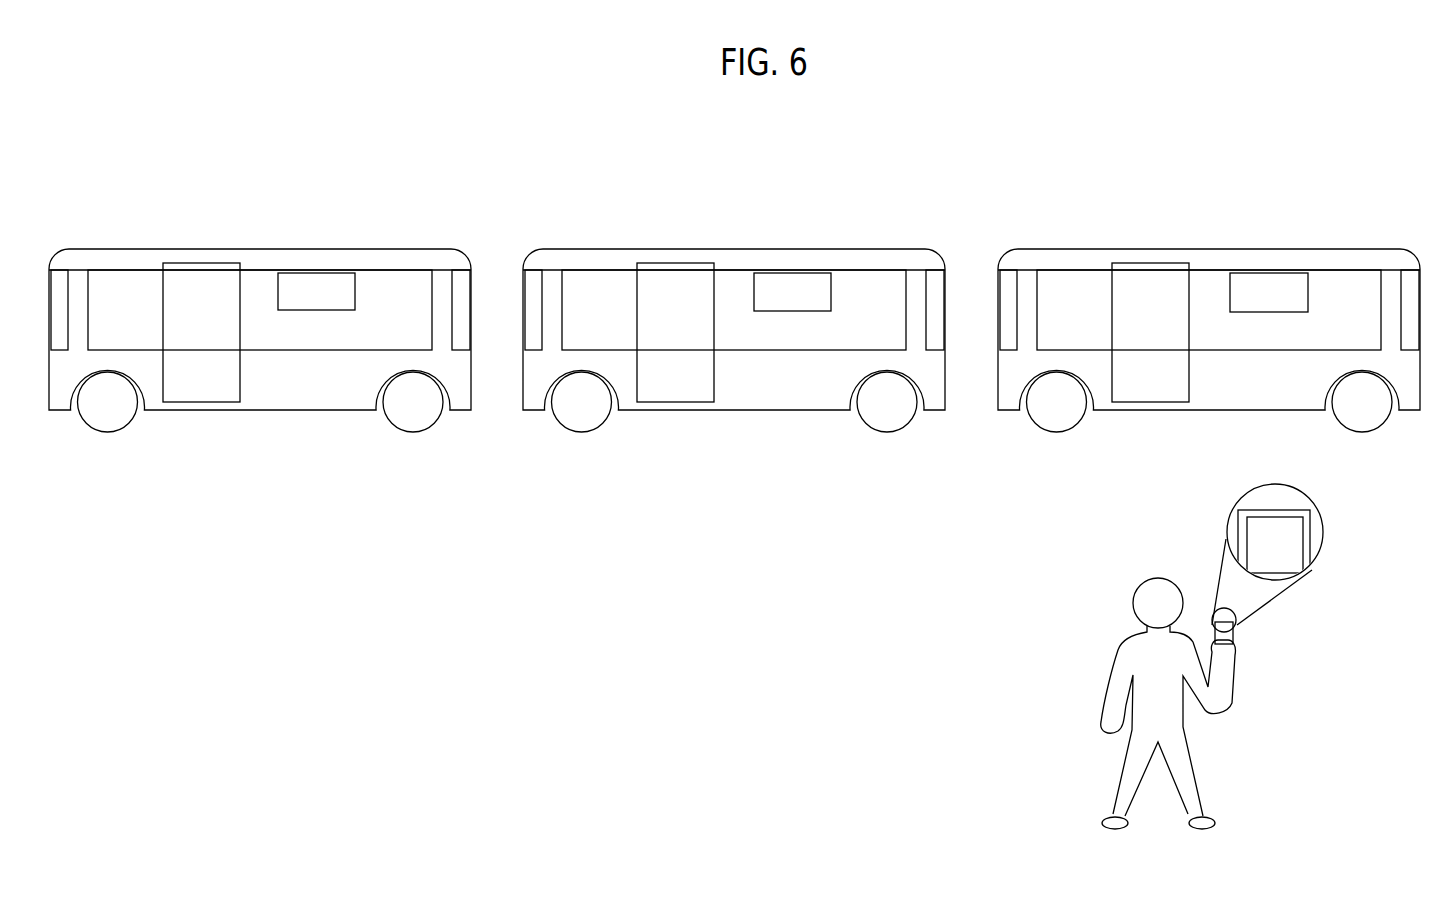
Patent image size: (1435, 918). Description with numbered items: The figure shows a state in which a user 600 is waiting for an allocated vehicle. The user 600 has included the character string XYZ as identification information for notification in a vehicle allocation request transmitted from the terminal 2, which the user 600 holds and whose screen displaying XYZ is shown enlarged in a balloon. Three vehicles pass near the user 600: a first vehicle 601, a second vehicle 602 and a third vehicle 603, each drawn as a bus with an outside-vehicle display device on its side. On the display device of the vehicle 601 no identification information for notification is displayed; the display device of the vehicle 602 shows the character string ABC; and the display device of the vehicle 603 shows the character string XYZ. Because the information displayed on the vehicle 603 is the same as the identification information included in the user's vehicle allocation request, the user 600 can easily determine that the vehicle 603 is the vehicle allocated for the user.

The vehicle 601 is at (186, 249).
The vehicle 602 is at (734, 306).
The vehicle 603 is at (1209, 306).
The user 600 is at (1196, 757).
The terminal 2 is at (1239, 636).